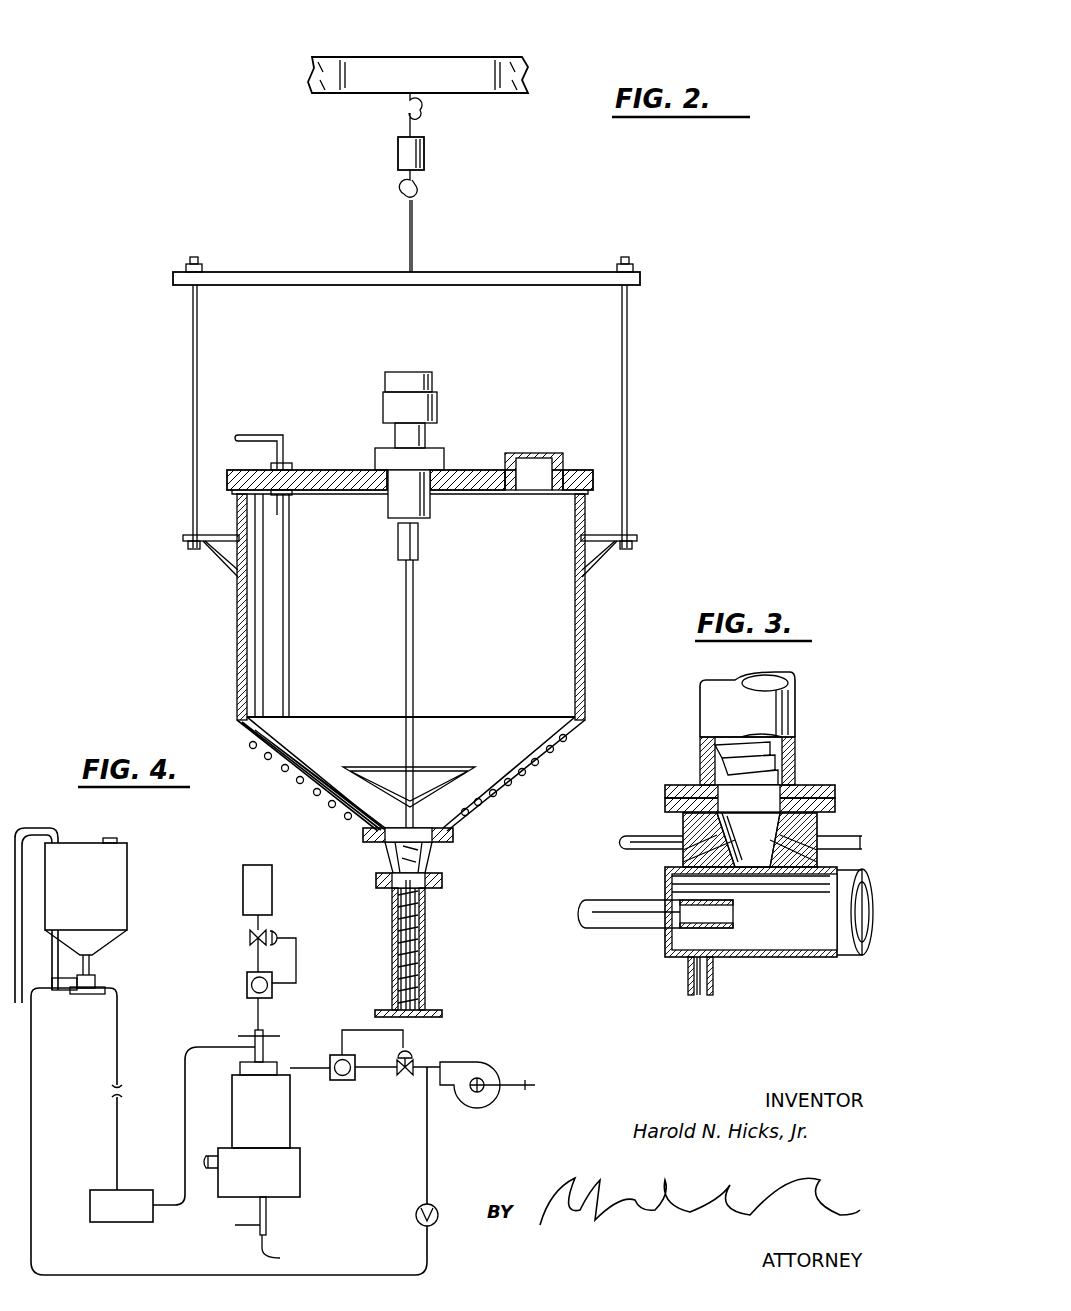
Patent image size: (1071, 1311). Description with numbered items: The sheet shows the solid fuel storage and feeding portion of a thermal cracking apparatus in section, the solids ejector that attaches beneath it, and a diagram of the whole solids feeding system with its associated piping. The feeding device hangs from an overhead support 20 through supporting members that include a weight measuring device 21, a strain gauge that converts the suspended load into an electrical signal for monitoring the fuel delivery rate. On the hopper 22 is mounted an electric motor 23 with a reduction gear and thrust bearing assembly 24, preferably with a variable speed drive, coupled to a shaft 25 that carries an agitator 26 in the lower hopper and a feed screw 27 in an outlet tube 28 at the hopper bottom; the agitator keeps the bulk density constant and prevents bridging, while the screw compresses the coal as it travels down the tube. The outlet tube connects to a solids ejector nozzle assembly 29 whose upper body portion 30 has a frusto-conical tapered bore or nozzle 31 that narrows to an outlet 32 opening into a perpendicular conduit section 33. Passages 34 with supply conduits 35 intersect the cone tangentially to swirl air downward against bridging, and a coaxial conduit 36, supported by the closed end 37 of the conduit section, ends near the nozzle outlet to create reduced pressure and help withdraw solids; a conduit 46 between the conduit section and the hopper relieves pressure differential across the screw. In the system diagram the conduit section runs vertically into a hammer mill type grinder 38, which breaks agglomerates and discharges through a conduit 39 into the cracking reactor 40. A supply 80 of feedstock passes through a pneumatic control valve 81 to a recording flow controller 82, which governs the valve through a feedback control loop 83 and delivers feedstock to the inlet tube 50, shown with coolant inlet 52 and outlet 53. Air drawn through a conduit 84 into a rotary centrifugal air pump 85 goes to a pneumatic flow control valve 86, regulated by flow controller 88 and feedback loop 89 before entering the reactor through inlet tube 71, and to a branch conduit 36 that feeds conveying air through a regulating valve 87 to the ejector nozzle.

In FIG. 2, the overhead support 20 is at (432, 70).
In FIG. 2, the weight measuring device 21 is at (398, 152).
In FIG. 2, the hopper 22 is at (585, 640).
In FIG. 4, the hopper 22 is at (105, 882).
In FIG. 2, the electric motor 23 is at (420, 410).
In FIG. 2, the reduction gear and thrust bearing assembly 24 is at (400, 502).
In FIG. 2, the shaft 25 is at (406, 616).
In FIG. 2, the agitator 26 is at (425, 770).
In FIG. 2, the feed screw 27 is at (415, 938).
In FIG. 2, the outlet tube 28 is at (426, 975).
In FIG. 3, the outlet tube 28 is at (770, 718).
In FIG. 4, the solids ejector nozzle assembly 29 is at (98, 985).
In FIG. 3, the upper body portion 30 is at (683, 830).
In FIG. 3, the tapered bore or nozzle 31 is at (763, 843).
In FIG. 3, the outlet 32 is at (757, 880).
In FIG. 3, the conduit section 33 is at (778, 958).
In FIG. 4, the conduit section 33 is at (119, 1062).
In FIG. 3, the passages 34 is at (817, 842).
In FIG. 3, the supply conduits 35 is at (628, 844).
In FIG. 4, the supply conduits 35 is at (72, 980).
In FIG. 3, the coaxial conduit 36 is at (618, 912).
In FIG. 4, the coaxial conduit 36 is at (66, 1003).
In FIG. 3, the closed end 37 is at (668, 945).
In FIG. 4, the hammer mill type grinder 38 is at (98, 1205).
In FIG. 4, the conduit 39 is at (183, 1130).
In FIG. 4, the cracking reactor 40 is at (277, 1126).
In FIG. 2, the conduit 46 is at (262, 430).
In FIG. 3, the conduit 46 is at (713, 982).
In FIG. 4, the conduit 46 is at (32, 828).
In FIG. 4, the feedstock inlet tube 50 is at (262, 1013).
In FIG. 4, the coolant inlet 52 is at (284, 1040).
In FIG. 4, the coolant outlet 53 is at (250, 1035).
In FIG. 4, the inlet tube 71 is at (302, 1072).
In FIG. 4, the supply of feedstock 80 is at (258, 893).
In FIG. 4, the pneumatic control valve 81 is at (250, 940).
In FIG. 4, the recording flow controller 82 is at (247, 985).
In FIG. 4, the feedback control loop 83 is at (298, 961).
In FIG. 4, the conduit 84 is at (502, 1093).
In FIG. 4, the rotary centrifugal air pump 85 is at (480, 1104).
In FIG. 4, the pneumatic flow control valve 86 is at (404, 1080).
In FIG. 4, the regulating valve 87 is at (416, 1220).
In FIG. 4, the flow controller 88 is at (343, 1082).
In FIG. 4, the feedback loop 89 is at (345, 1030).